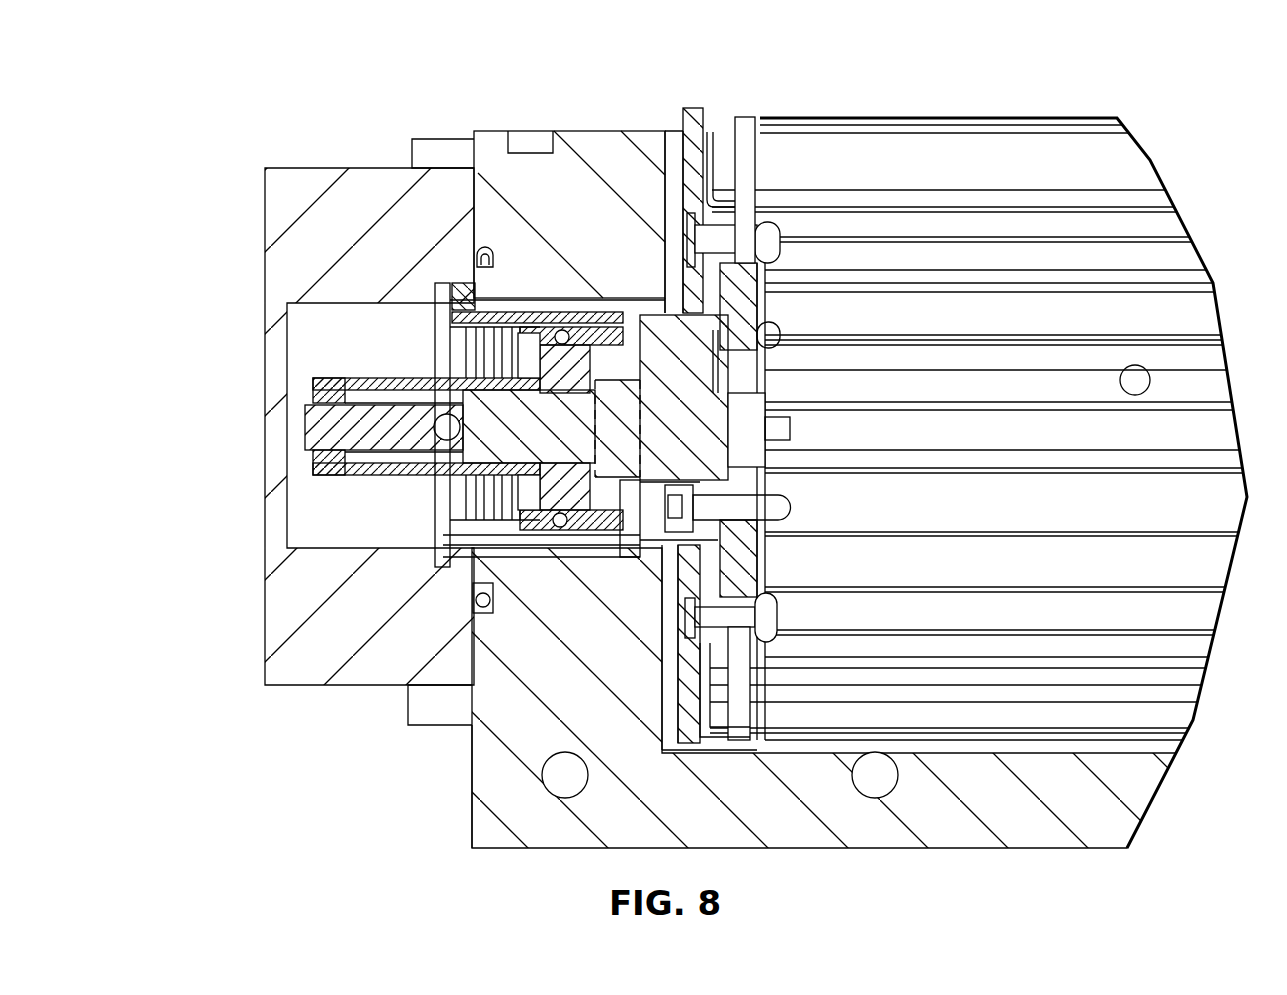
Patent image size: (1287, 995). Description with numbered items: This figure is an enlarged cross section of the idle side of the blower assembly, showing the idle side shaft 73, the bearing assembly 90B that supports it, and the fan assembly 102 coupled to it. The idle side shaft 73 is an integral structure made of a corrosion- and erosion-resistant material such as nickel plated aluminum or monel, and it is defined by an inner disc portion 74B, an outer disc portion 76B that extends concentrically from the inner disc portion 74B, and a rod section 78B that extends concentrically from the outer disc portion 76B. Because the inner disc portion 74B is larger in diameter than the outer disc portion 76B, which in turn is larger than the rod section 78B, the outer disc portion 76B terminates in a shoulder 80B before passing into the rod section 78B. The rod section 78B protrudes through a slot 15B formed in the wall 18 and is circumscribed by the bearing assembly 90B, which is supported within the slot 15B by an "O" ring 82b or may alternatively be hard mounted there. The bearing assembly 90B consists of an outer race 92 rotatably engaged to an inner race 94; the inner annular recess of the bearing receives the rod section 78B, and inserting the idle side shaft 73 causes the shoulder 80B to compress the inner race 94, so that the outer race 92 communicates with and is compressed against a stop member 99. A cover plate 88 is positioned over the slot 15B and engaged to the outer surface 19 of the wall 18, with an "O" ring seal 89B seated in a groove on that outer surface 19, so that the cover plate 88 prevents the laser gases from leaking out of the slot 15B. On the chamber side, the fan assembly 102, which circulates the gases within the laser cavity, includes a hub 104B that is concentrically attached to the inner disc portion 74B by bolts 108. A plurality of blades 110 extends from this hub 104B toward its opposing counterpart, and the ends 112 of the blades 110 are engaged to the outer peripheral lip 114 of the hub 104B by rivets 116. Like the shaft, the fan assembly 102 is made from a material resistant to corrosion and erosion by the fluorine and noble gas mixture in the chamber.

The slot 15B is at (490, 547).
The wall 18 is at (500, 772).
The outer surface 19 is at (470, 742).
The idle side shaft 73 is at (700, 375).
The inner disc portion 74B is at (787, 428).
The outer disc portion 76B is at (620, 447).
The rod section 78B is at (520, 418).
The shoulder 80B is at (612, 390).
The "O" ring 82b is at (613, 375).
The cover plate 88 is at (305, 662).
The "O" ring seal 89B is at (494, 593).
The bearing assembly 90B is at (553, 483).
The outer race 92 is at (560, 330).
The inner race 94 is at (567, 385).
The stop member 99 is at (527, 343).
The fan assembly 102 is at (1162, 184).
The hub 104B is at (685, 106).
The bolts 108 is at (785, 510).
The blades 110 is at (1150, 228).
The ends 112 is at (723, 150).
The outer peripheral lip 114 is at (688, 200).
The rivets 116 is at (772, 235).